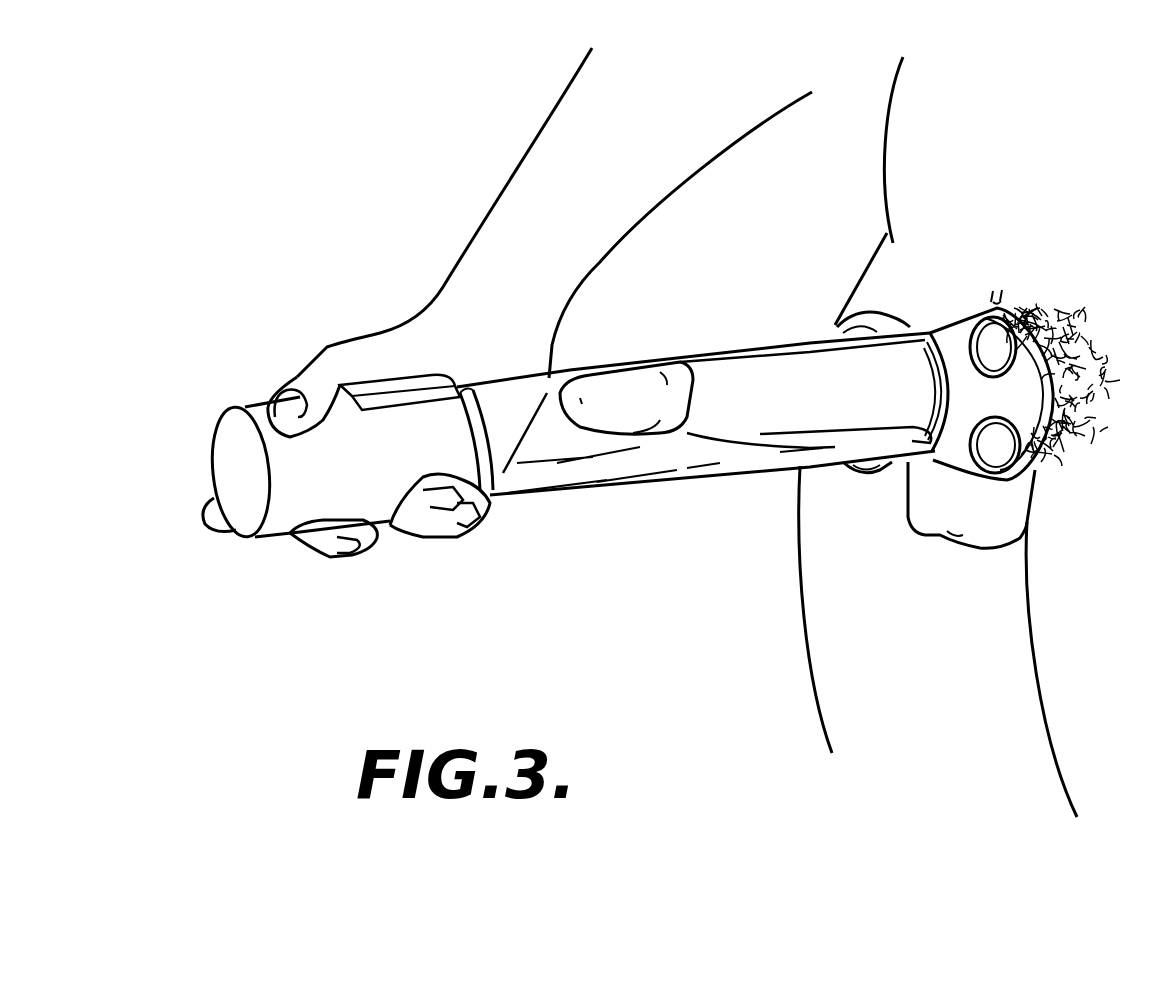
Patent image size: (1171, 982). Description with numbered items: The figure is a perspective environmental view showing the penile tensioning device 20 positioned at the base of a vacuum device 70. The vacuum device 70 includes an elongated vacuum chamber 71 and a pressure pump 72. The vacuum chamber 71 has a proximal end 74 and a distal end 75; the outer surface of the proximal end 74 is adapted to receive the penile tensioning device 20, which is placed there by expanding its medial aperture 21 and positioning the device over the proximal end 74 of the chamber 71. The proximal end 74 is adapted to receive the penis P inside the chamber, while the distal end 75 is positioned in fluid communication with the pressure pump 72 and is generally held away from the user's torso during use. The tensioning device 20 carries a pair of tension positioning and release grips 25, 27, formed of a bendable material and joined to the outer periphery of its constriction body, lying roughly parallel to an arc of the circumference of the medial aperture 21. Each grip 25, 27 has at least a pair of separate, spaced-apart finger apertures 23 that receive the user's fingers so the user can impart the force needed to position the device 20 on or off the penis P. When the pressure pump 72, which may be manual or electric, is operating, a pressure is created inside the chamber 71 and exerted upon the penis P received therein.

The penile tensioning device 20 is at (974, 279).
The medial aperture 21 is at (928, 332).
The finger apertures 23 is at (1010, 357).
The tension positioning and release grip 25 is at (870, 470).
The tension positioning and release grip 27 is at (1014, 477).
The vacuum device 70 is at (688, 458).
The elongated vacuum chamber 71 is at (543, 500).
The pressure pump 72 is at (262, 533).
The proximal end 74 is at (927, 450).
The distal end 75 is at (459, 392).
The penis P is at (735, 375).